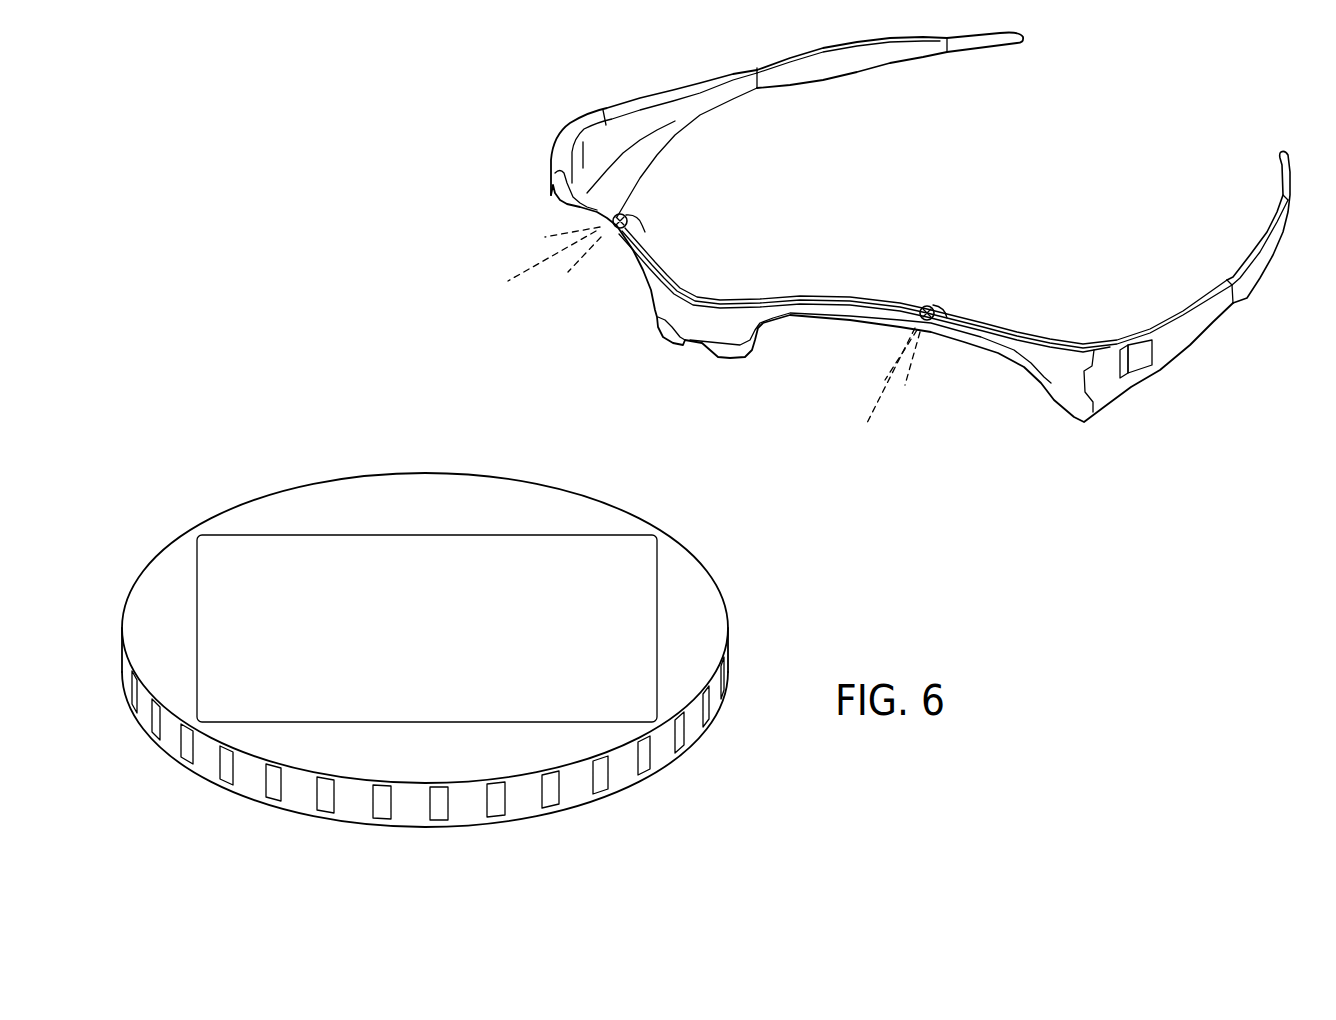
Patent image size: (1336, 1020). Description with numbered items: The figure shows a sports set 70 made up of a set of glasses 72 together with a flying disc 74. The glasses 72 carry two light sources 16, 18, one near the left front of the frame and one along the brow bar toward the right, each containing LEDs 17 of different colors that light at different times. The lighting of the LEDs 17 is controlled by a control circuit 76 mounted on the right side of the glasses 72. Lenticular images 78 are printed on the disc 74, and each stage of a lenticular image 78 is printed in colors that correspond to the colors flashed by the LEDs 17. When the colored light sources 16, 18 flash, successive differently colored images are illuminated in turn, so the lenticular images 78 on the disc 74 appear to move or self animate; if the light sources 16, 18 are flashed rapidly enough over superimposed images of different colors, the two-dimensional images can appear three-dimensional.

The sports set 70 is at (502, 146).
The glasses 72 is at (712, 97).
The light source 16 is at (624, 212).
The LEDs 17 is at (612, 243).
The light source 18 is at (938, 305).
The control circuit 76 is at (1140, 360).
The flying disc 74 is at (730, 600).
The lenticular image 78 is at (367, 552).